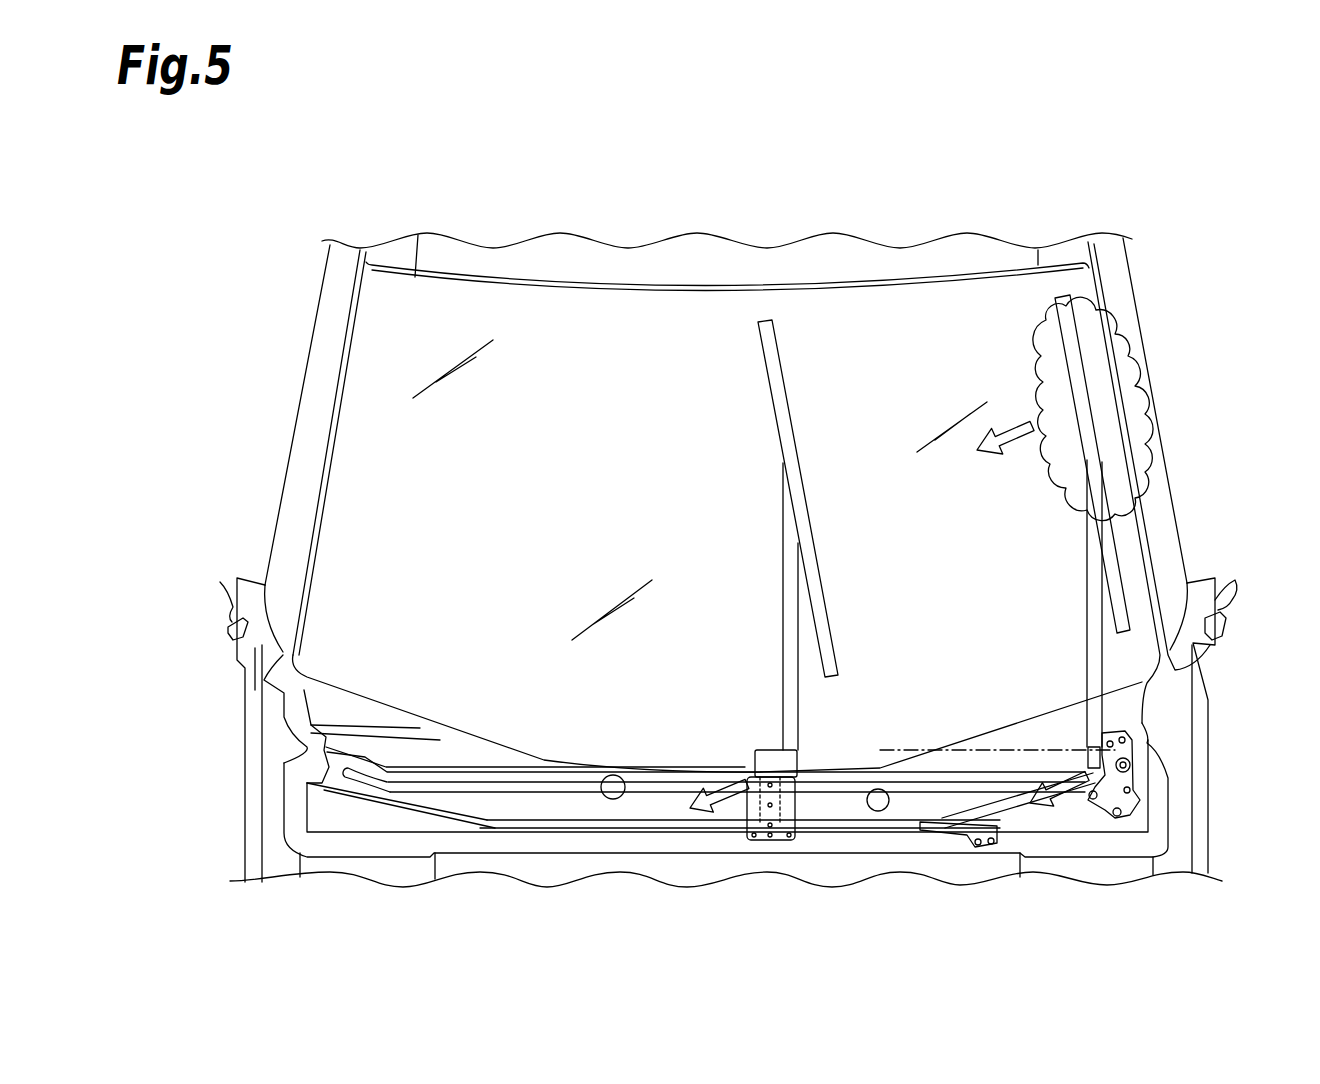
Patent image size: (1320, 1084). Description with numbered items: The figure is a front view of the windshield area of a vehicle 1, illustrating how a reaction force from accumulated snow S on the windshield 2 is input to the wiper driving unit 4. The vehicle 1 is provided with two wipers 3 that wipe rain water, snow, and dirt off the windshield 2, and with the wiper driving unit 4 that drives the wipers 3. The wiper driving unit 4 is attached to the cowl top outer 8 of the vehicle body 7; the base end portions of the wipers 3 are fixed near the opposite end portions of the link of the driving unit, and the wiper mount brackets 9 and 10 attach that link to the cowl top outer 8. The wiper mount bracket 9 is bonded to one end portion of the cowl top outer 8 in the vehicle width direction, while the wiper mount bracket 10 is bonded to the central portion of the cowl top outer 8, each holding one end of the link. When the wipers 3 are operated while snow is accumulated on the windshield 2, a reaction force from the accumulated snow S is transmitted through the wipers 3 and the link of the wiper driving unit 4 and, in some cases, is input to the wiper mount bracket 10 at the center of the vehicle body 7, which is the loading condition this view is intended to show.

The vehicle 1 is at (321, 208).
The windshield 2 is at (630, 320).
The wipers 3 is at (770, 372).
The wiper driving unit 4 is at (898, 750).
The vehicle body 7 is at (1212, 733).
The cowl top outer 8 is at (875, 842).
The wiper mount bracket 9 is at (1140, 787).
The wiper mount bracket 10 is at (762, 843).
The accumulated snow S is at (1124, 438).